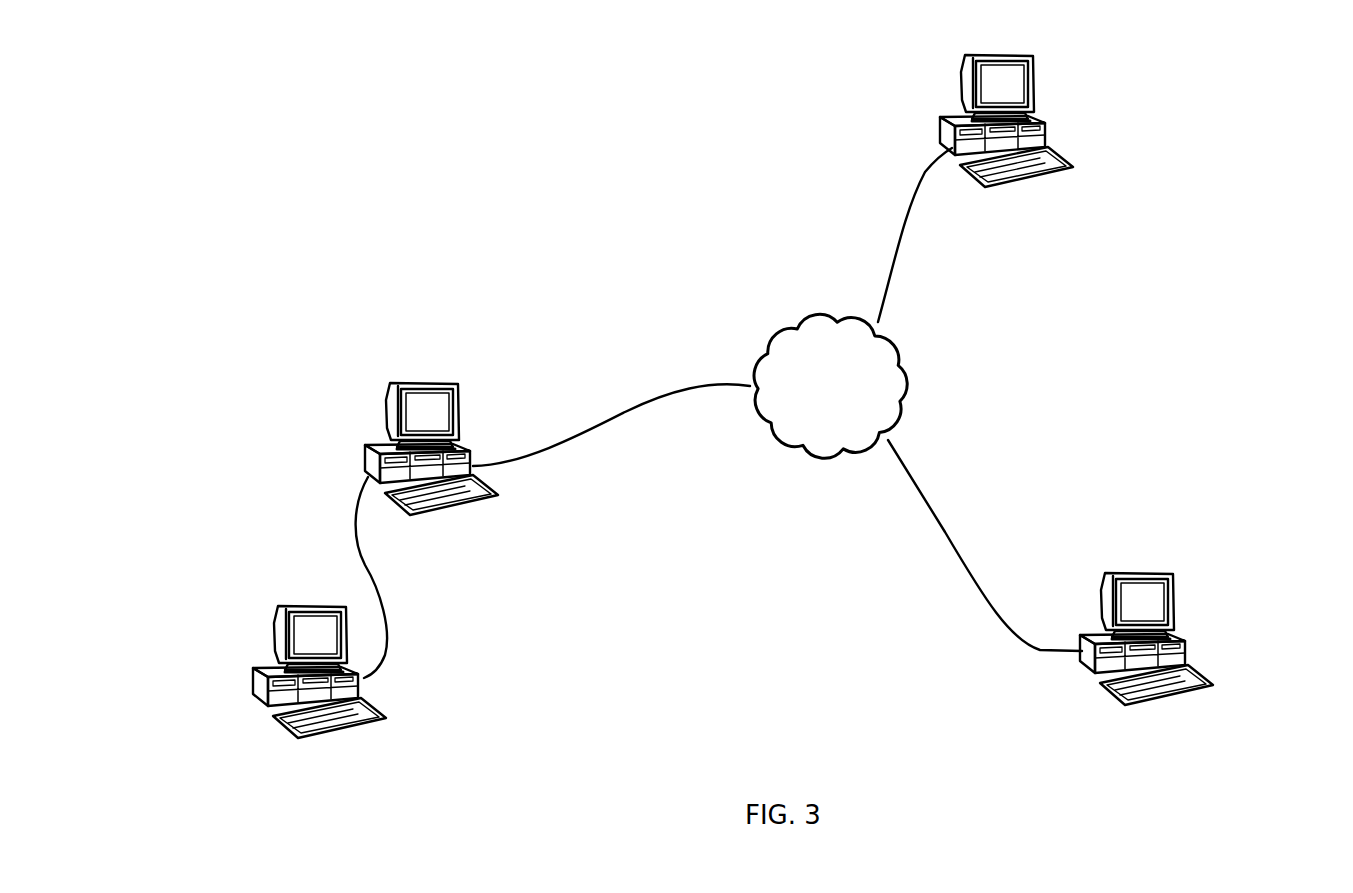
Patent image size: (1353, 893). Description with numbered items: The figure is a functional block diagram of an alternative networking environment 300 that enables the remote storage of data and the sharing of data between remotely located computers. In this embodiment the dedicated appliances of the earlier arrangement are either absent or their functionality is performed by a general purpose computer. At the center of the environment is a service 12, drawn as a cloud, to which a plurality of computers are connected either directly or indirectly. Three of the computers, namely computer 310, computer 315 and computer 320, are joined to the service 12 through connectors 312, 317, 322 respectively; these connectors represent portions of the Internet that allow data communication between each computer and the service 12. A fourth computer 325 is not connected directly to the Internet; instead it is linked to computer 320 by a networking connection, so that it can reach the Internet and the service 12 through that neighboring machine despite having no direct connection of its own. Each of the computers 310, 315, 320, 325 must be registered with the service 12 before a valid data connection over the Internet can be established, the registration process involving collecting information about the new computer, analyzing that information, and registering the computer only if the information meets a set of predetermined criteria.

The networking environment 300 is at (375, 209).
The service 12 is at (814, 330).
The computer 310 is at (1032, 96).
The connector 312 is at (902, 216).
The computer 315 is at (1172, 612).
The connector 317 is at (947, 532).
The computer 320 is at (404, 418).
The connector 322 is at (610, 420).
The computer 325 is at (295, 638).